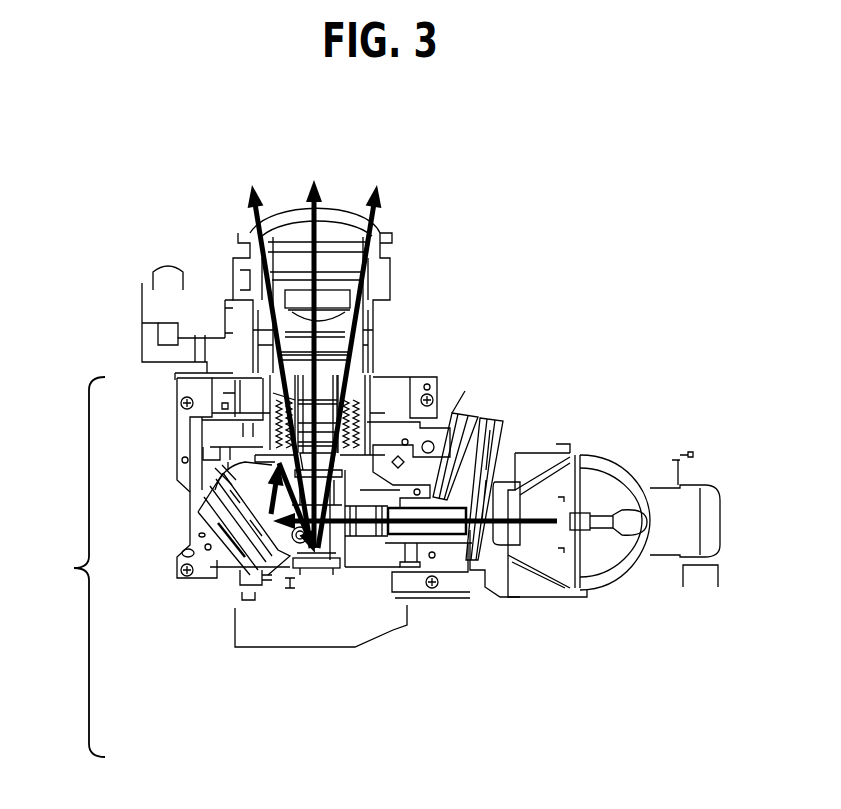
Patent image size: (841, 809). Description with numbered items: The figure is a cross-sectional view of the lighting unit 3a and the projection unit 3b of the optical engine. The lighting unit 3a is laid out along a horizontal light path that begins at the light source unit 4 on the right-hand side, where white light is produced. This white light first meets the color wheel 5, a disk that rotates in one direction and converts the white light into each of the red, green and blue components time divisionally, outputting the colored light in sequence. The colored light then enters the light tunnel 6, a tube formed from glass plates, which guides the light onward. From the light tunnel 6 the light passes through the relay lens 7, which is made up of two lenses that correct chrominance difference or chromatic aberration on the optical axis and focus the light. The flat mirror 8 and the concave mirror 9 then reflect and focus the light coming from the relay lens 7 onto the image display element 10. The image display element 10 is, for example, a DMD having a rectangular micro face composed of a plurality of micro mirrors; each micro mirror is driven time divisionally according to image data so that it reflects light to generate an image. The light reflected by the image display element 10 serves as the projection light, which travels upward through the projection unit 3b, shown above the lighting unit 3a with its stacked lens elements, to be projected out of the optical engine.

The lighting unit 3a is at (280, 566).
The projection unit 3b is at (412, 287).
The light source unit 4 is at (639, 588).
The color wheel 5 is at (504, 450).
The light tunnel 6 is at (444, 546).
The relay lens 7 is at (355, 541).
The flat mirror 8 is at (262, 528).
The concave mirror 9 is at (240, 478).
The image display element 10 is at (308, 573).